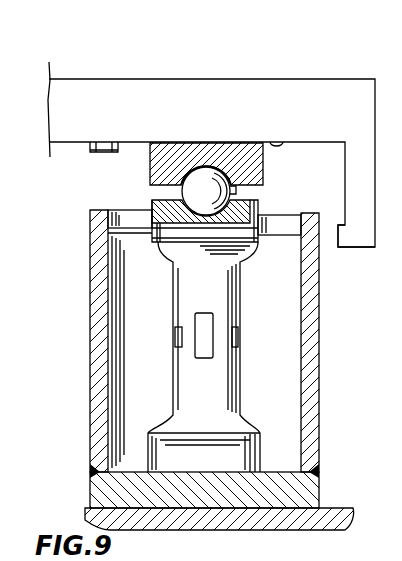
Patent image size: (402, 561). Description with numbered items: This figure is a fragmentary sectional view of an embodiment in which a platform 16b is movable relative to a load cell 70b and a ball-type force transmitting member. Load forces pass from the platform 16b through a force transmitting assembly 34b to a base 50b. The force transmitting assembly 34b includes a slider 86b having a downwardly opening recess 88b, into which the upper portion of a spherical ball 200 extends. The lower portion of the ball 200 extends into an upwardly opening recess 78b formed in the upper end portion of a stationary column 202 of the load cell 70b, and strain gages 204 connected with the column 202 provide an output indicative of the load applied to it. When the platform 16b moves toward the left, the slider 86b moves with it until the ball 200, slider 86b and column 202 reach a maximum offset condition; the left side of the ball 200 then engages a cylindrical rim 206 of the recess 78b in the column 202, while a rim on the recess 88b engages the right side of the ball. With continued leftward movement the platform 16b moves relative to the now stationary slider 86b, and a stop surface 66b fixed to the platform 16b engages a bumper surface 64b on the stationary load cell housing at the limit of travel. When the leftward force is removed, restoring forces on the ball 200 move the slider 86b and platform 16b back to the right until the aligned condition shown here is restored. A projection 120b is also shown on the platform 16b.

The platform 16b is at (270, 76).
The projection 120b is at (284, 142).
The slider 86b is at (147, 172).
The downwardly opening recess 88b is at (262, 171).
The spherical ball 200 is at (178, 190).
The upwardly opening recess 78b is at (250, 225).
The cylindrical rim 206 is at (150, 206).
The column 202 is at (226, 290).
The strain gages 204 is at (232, 190).
The stop surface 66b is at (330, 233).
The bumper surface 64b is at (319, 235).
The load cell 70b is at (86, 381).
The force transmitting assembly 34b is at (68, 323).
The base 50b is at (325, 508).